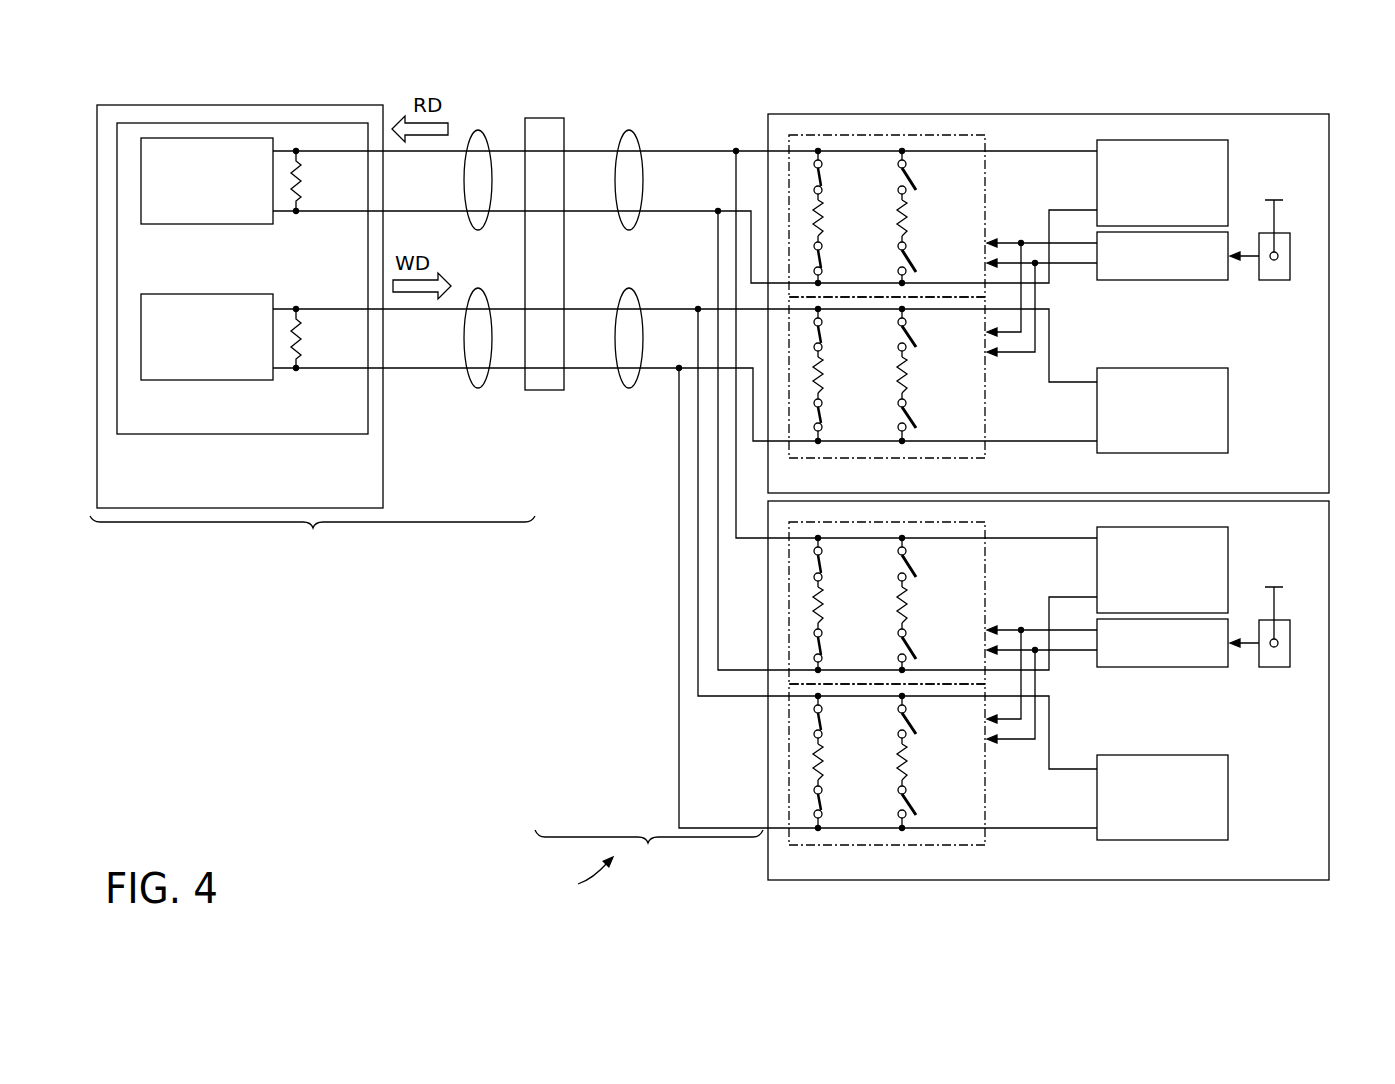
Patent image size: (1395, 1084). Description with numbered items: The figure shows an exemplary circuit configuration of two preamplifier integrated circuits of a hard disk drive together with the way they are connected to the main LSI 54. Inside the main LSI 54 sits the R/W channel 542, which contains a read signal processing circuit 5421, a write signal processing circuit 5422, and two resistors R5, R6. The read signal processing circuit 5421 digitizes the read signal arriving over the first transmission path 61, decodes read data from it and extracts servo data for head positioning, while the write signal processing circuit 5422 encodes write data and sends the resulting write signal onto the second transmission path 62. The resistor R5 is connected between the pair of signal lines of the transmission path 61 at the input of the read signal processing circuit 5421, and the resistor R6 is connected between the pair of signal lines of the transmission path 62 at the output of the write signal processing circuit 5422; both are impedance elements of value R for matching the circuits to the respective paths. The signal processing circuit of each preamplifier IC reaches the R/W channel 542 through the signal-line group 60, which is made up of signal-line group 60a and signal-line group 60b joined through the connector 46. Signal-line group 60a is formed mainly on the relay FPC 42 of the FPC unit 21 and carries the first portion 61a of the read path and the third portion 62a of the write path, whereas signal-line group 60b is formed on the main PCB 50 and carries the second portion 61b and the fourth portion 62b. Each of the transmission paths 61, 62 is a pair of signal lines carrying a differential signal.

The FPC unit 21 is at (579, 877).
The relay FPC 42 is at (649, 851).
The connector 46 is at (545, 392).
The main PCB 50 is at (312, 538).
The main LSI 54 is at (383, 458).
The signal-line group 60 is at (520, 458).
The signal-line group 60a is at (659, 238).
The signal-line group 60b is at (507, 238).
The first transmission path 61 is at (590, 216).
The first portion of transmission path 61a is at (630, 131).
The second portion of transmission path 61b is at (478, 131).
The second transmission path 62 is at (590, 372).
The third portion of transmission path 62a is at (630, 289).
The fourth portion of transmission path 62b is at (480, 289).
The R/W channel 542 is at (150, 436).
The read signal processing circuit 5421 is at (163, 226).
The write signal processing circuit 5422 is at (245, 292).
The resistor R5 is at (302, 185).
The resistor R6 is at (302, 343).